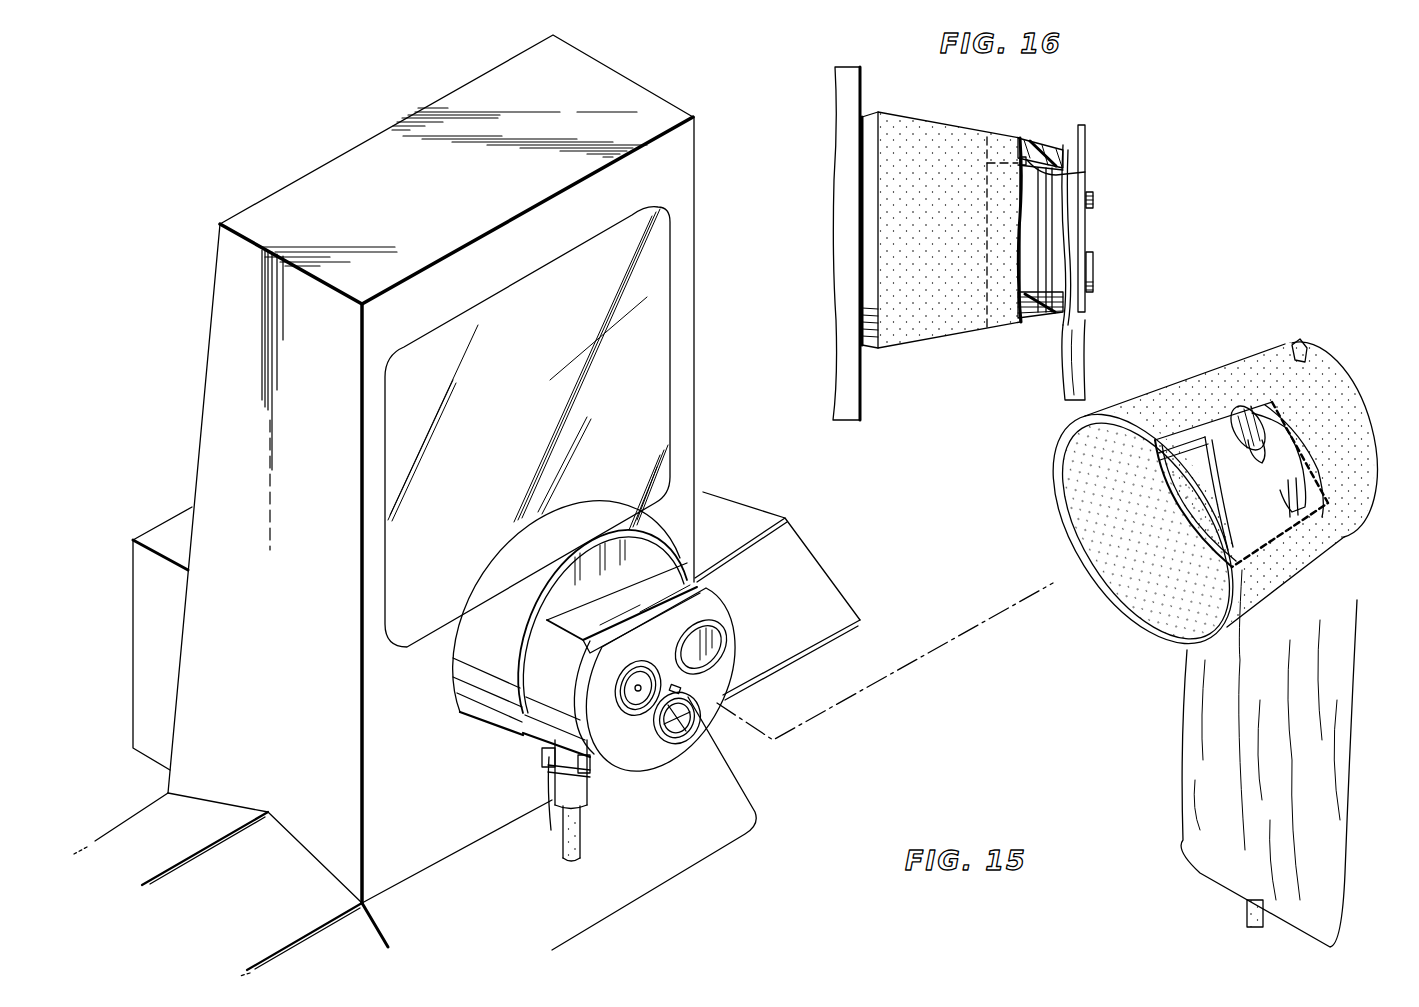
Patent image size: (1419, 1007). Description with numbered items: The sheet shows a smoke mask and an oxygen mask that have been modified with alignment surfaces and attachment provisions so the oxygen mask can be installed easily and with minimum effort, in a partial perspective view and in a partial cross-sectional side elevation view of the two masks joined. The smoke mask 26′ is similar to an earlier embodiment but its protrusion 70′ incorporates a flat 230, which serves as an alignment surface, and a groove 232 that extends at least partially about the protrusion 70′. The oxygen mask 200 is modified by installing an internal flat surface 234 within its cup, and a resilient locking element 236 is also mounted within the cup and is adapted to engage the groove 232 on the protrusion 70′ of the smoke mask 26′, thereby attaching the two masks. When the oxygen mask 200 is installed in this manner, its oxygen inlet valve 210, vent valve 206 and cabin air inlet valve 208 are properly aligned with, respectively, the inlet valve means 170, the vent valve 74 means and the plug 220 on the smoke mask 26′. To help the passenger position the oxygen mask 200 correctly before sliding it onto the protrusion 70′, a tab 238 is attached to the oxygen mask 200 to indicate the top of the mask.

In FIG. 15, the smoke mask 26′ is at (310, 165).
In FIG. 16, the smoke mask 26′ is at (832, 153).
In FIG. 15, the protrusion 70′ is at (601, 659).
In FIG. 15, the flat 230 is at (777, 548).
In FIG. 16, the flat 230 is at (1019, 138).
In FIG. 15, the groove 232 is at (782, 608).
In FIG. 16, the groove 232 is at (1038, 255).
In FIG. 15, the plug 220 is at (729, 635).
In FIG. 15, the vent valve means 74 is at (638, 729).
In FIG. 15, the inlet valve means 170 is at (690, 723).
In FIG. 15, the oxygen mask 200 is at (1230, 350).
In FIG. 16, the oxygen mask 200 is at (937, 338).
In FIG. 15, the cabin air inlet valve 208 is at (1252, 440).
In FIG. 15, the internal flat surface 234 is at (1237, 440).
In FIG. 16, the internal flat surface 234 is at (1027, 160).
In FIG. 15, the resilient locking element 236 is at (1218, 443).
In FIG. 16, the resilient locking element 236 is at (1057, 163).
In FIG. 15, the tab 238 is at (1300, 340).
In FIG. 16, the tab 238 is at (1084, 132).
In FIG. 15, the oxygen inlet valve 210 is at (1340, 530).
In FIG. 16, the oxygen inlet valve 210 is at (1093, 273).
In FIG. 16, the vent valve 206 is at (1086, 192).